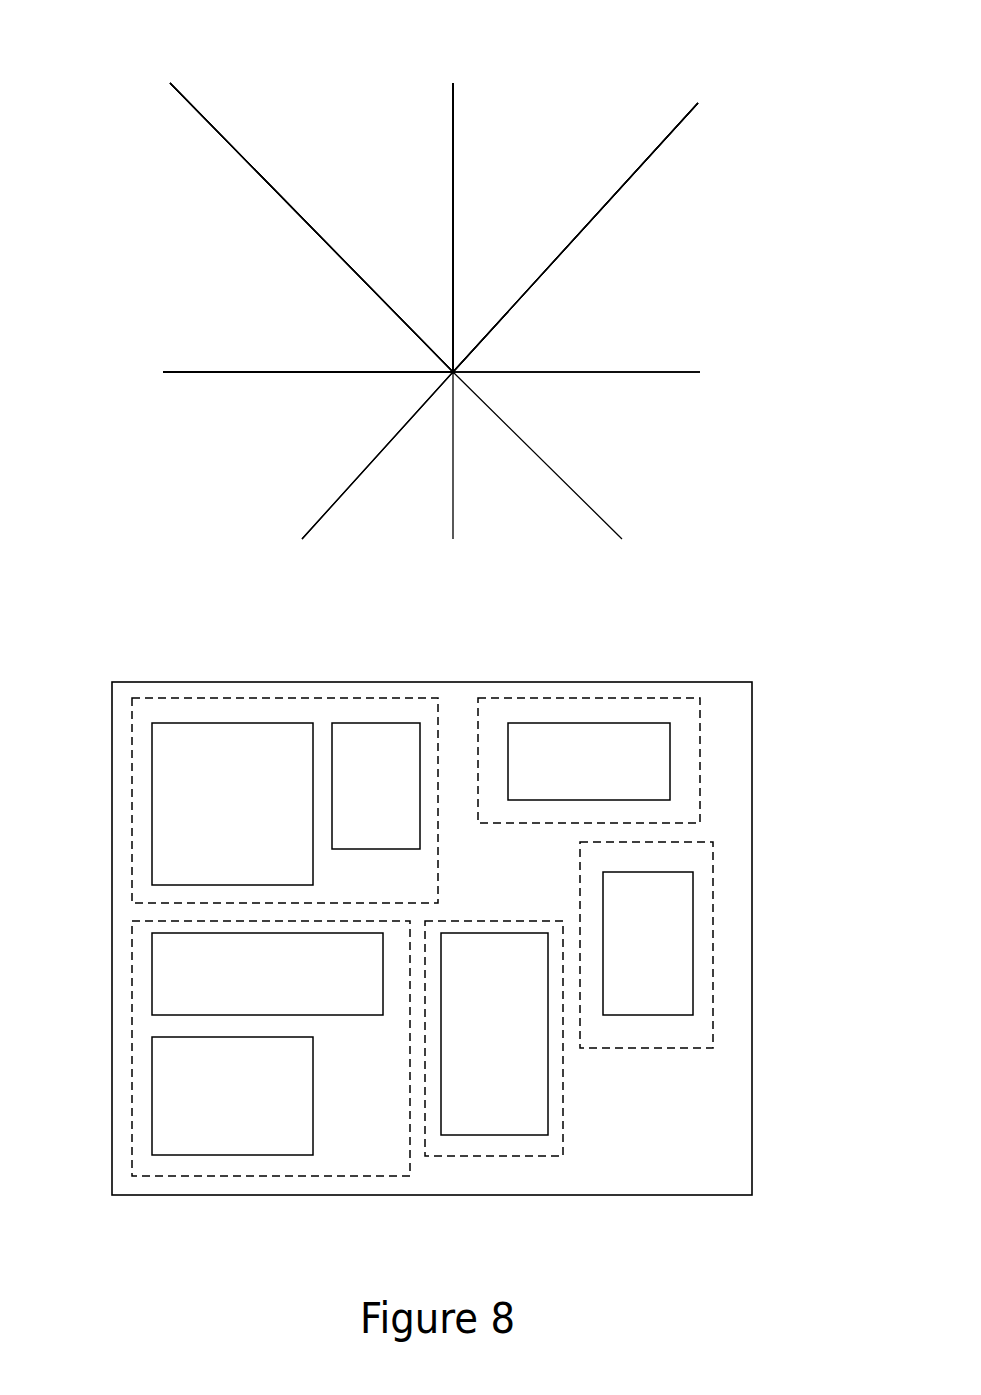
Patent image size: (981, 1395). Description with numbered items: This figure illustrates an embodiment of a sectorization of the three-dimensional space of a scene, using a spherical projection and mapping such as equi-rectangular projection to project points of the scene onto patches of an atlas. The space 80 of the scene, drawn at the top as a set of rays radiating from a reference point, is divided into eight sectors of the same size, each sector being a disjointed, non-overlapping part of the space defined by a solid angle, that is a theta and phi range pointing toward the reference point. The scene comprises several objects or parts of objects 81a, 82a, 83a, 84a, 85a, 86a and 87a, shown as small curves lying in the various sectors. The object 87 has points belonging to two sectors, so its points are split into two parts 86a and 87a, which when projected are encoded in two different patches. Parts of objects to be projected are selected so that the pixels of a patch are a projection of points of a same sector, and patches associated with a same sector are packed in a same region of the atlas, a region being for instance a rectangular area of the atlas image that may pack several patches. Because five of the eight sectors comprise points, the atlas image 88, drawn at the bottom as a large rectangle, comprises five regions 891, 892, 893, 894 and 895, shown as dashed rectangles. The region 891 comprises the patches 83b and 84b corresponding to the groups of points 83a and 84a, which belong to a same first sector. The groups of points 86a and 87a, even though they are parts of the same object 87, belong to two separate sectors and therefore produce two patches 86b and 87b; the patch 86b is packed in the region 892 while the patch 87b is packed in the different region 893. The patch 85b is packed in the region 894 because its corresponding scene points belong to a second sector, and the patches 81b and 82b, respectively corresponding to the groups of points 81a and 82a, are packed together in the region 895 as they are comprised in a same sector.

The space of the scene 80 is at (153, 53).
The group of points 81a is at (343, 180).
The group of points 82a is at (345, 165).
The group of points 83a is at (503, 142).
The group of points 84a is at (485, 138).
The group of points 85a is at (598, 252).
The part of object 86a is at (213, 405).
The part of object 87a is at (213, 405).
The object 87 is at (213, 403).
The atlas image 88 is at (112, 798).
The region 891 is at (277, 697).
The region 892 is at (583, 697).
The region 893 is at (715, 937).
The region 894 is at (500, 1157).
The region 895 is at (130, 1028).
The patch 81b is at (253, 1109).
The patch 82b is at (287, 985).
The patch 83b is at (253, 819).
The patch 84b is at (395, 799).
The patch 85b is at (514, 1047).
The patch 86b is at (608, 774).
The patch 87b is at (667, 955).